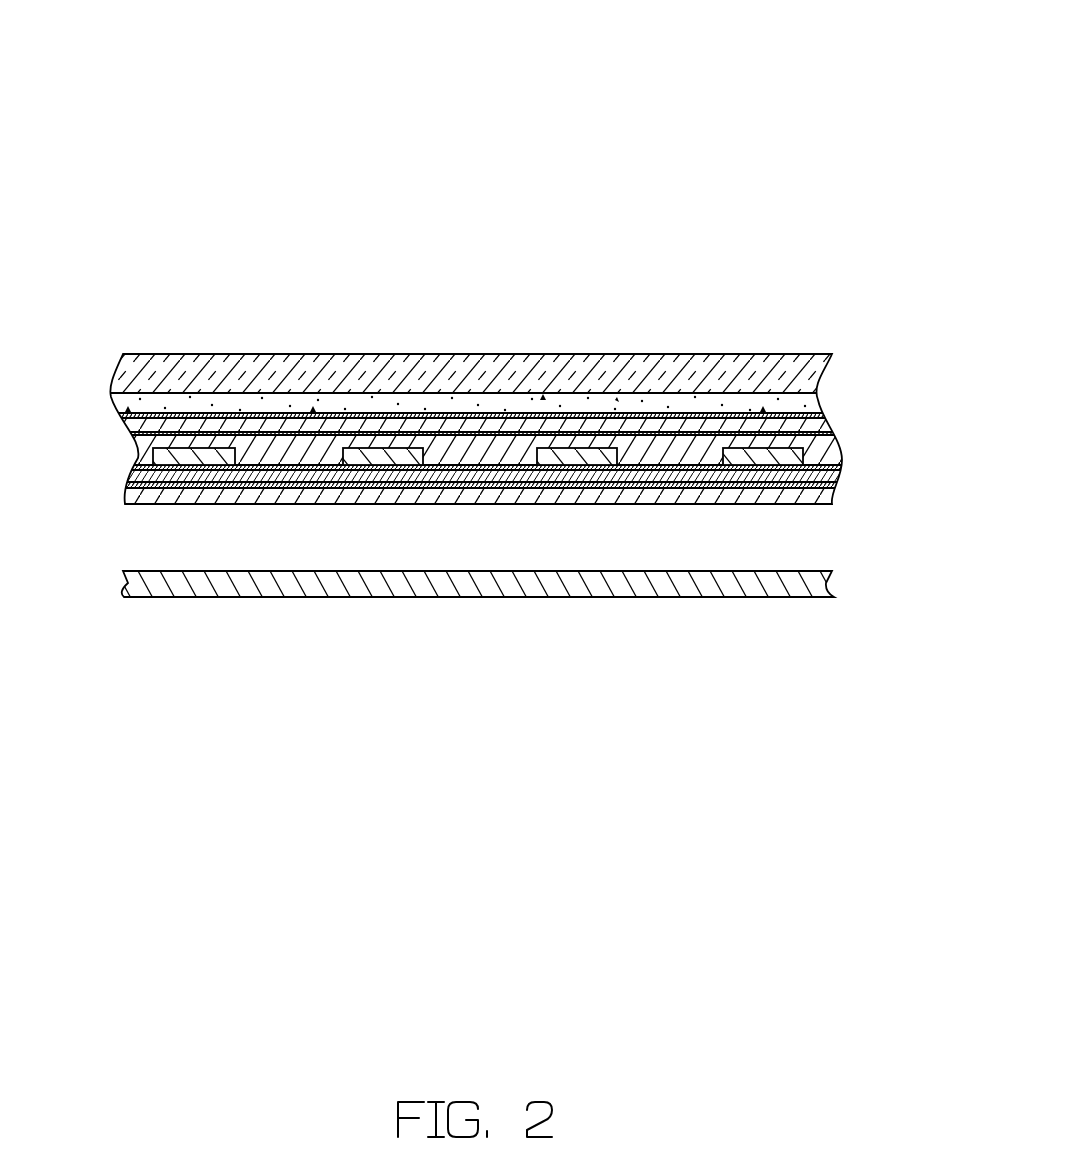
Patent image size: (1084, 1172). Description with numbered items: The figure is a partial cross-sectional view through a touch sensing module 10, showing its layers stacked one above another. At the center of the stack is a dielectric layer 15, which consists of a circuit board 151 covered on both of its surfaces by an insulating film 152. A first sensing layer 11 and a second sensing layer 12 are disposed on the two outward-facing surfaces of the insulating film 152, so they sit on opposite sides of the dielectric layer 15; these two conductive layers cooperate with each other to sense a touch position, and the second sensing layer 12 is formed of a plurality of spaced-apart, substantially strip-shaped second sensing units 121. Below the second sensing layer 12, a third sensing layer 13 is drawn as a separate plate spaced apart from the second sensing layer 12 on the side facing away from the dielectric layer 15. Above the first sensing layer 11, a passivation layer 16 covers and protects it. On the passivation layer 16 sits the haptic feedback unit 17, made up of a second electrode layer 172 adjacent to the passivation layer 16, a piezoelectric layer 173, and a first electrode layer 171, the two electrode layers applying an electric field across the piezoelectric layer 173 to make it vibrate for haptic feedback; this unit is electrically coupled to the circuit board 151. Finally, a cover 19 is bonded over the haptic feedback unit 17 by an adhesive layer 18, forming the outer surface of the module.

The touch sensing module 10 is at (523, 88).
The first sensing layer 11 is at (160, 457).
The second sensing layer 12 is at (461, 525).
The second sensing units 121 is at (213, 494).
The third sensing layer 13 is at (150, 583).
The dielectric layer 15 is at (533, 481).
The circuit board 151 is at (838, 476).
The insulating film 152 is at (838, 466).
The passivation layer 16 is at (823, 436).
The haptic feedback unit 17 is at (480, 329).
The first electrode layer 171 is at (450, 415).
The second electrode layer 172 is at (478, 425).
The piezoelectric layer 173 is at (388, 283).
The adhesive layer 18 is at (148, 405).
The cover 19 is at (190, 373).